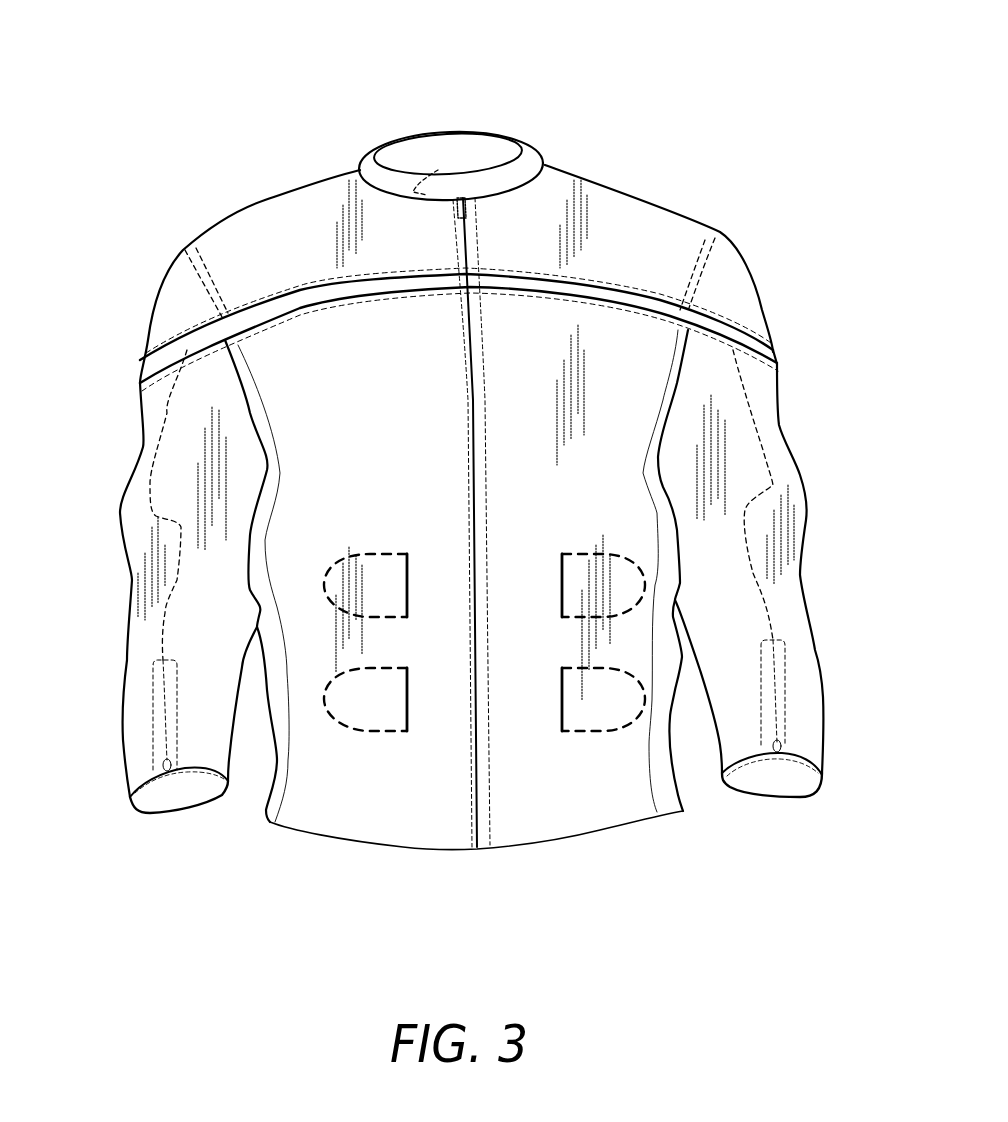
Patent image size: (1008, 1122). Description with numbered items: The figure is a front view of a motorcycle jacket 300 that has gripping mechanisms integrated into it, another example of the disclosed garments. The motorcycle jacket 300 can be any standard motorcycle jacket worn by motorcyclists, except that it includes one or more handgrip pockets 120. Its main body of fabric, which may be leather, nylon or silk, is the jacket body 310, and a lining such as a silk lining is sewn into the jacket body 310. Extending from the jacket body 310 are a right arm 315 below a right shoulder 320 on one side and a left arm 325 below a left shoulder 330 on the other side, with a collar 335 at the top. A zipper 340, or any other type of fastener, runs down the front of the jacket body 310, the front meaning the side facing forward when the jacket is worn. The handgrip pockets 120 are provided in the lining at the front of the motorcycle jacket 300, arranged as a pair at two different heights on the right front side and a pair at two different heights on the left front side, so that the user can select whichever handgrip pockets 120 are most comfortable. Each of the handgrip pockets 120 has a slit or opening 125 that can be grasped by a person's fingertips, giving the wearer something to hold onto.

The motorcycle jacket 300 is at (243, 64).
The jacket body 310 is at (336, 838).
The right arm 315 is at (120, 512).
The right shoulder 320 is at (185, 245).
The left arm 325 is at (805, 512).
The left shoulder 330 is at (720, 230).
The collar 335 is at (463, 130).
The zipper 340 is at (452, 218).
The handgrip pockets 120 is at (363, 557).
The slit or opening 125 is at (408, 584).